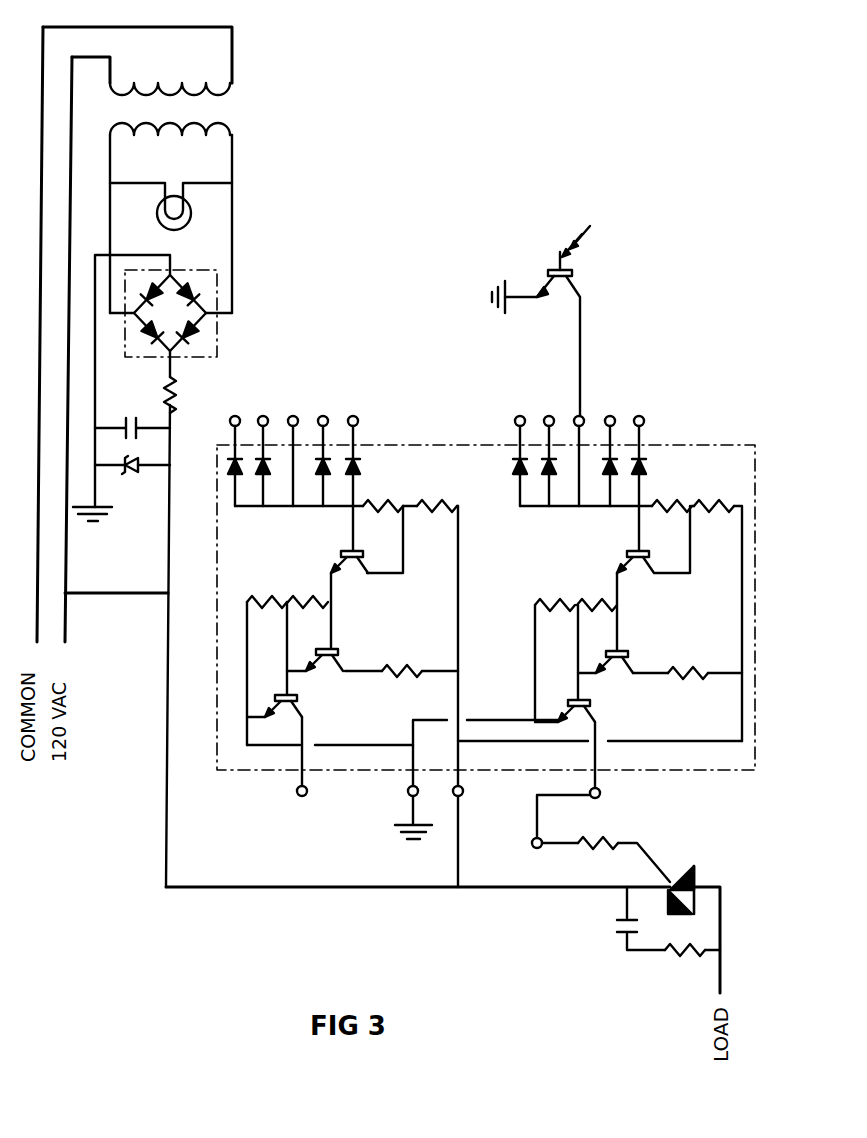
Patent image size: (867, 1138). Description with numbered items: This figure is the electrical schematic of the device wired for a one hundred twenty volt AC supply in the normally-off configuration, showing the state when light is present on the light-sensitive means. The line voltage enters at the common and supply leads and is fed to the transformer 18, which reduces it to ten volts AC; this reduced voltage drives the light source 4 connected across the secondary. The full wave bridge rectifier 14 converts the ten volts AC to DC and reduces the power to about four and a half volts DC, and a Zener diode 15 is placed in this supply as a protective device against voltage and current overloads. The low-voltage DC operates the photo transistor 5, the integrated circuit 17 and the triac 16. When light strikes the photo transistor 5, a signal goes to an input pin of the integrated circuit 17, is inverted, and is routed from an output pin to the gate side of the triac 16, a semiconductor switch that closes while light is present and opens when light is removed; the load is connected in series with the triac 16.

The transformer 18 is at (232, 146).
The light source 4 is at (187, 224).
The full wave bridge rectifier 14 is at (210, 338).
The Zener diode 15 is at (123, 469).
The photo transistor 5 is at (573, 269).
The integrated circuit 17 is at (733, 462).
The triac 16 is at (681, 869).